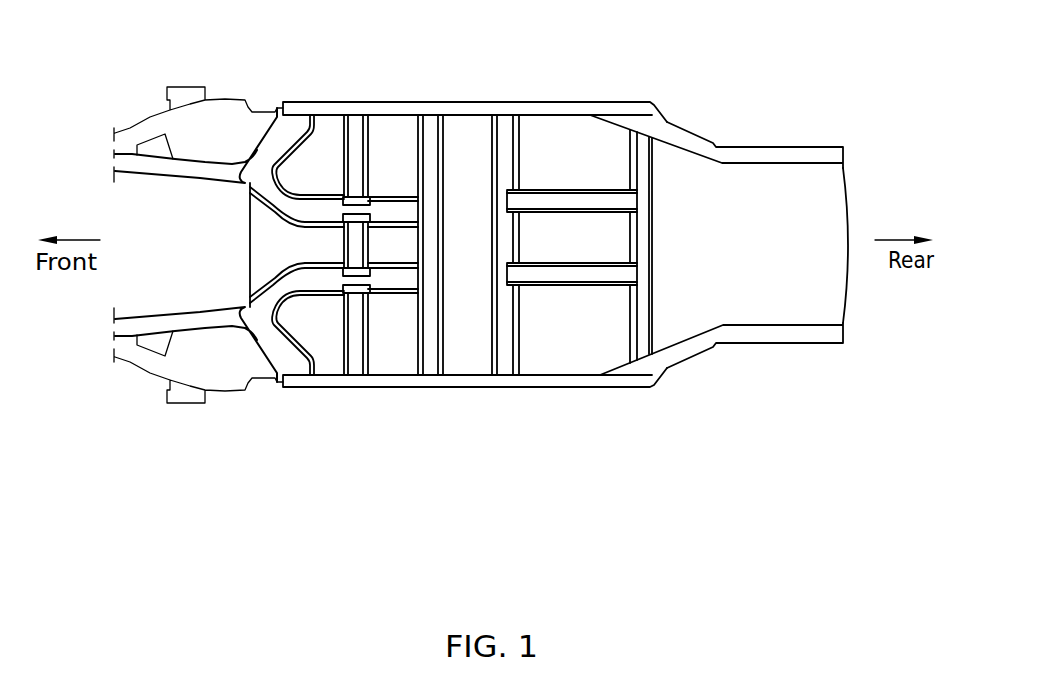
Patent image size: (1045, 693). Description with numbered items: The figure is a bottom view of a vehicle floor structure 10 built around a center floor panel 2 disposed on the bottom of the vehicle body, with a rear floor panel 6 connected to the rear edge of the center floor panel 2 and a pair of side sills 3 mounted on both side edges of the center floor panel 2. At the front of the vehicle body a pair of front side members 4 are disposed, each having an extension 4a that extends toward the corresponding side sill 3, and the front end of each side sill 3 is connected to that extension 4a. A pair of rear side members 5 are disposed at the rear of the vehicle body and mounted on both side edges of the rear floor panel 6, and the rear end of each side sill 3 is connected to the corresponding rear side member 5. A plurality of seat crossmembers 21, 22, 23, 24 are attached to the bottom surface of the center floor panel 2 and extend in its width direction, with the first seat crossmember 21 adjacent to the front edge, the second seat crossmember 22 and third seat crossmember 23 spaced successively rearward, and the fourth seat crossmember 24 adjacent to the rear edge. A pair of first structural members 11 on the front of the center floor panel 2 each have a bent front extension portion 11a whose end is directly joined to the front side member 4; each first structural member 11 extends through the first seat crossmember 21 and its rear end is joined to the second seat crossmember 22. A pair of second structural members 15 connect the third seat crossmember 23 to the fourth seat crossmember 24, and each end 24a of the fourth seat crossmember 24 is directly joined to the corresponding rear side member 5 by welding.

The vehicle floor structure 10 is at (484, 73).
The center floor panel 2 is at (568, 128).
The side sill 3 is at (433, 110).
The front side member 4 is at (198, 180).
The extension 4a is at (288, 150).
The rear side member 5 is at (682, 128).
The rear floor panel 6 is at (827, 208).
The first structural member 11 is at (398, 207).
The front extension portion 11a is at (274, 205).
The second structural member 15 is at (577, 274).
The first seat crossmember 21 is at (357, 125).
The second seat crossmember 22 is at (428, 355).
The third seat crossmember 23 is at (507, 353).
The fourth seat crossmember 24 is at (652, 315).
The end of the fourth seat crossmember 24a is at (640, 127).